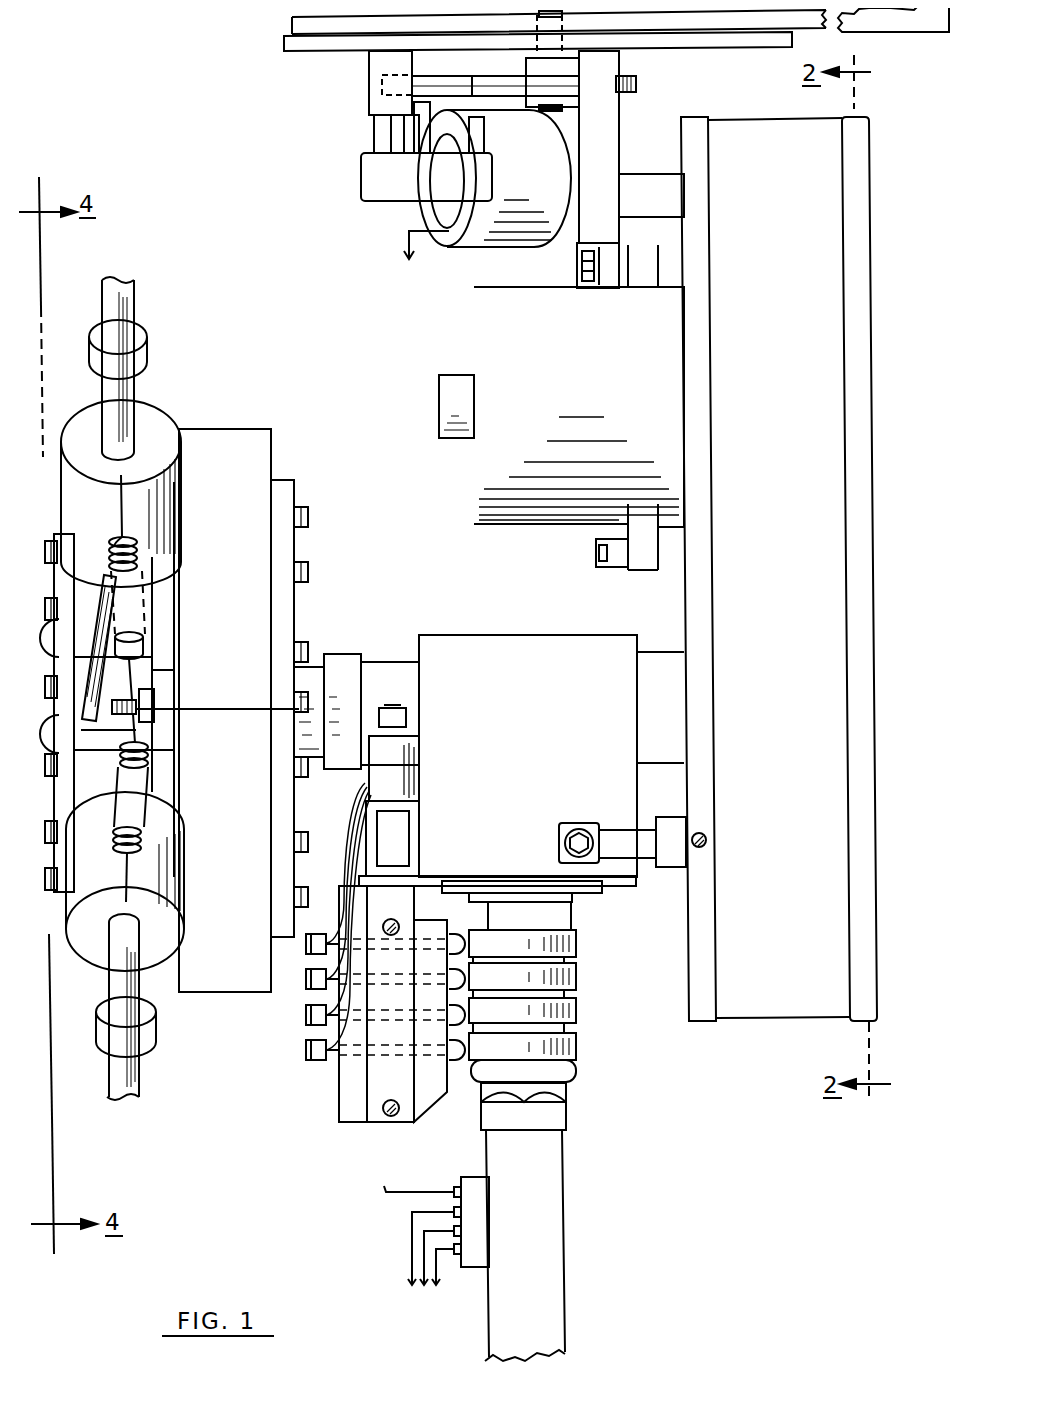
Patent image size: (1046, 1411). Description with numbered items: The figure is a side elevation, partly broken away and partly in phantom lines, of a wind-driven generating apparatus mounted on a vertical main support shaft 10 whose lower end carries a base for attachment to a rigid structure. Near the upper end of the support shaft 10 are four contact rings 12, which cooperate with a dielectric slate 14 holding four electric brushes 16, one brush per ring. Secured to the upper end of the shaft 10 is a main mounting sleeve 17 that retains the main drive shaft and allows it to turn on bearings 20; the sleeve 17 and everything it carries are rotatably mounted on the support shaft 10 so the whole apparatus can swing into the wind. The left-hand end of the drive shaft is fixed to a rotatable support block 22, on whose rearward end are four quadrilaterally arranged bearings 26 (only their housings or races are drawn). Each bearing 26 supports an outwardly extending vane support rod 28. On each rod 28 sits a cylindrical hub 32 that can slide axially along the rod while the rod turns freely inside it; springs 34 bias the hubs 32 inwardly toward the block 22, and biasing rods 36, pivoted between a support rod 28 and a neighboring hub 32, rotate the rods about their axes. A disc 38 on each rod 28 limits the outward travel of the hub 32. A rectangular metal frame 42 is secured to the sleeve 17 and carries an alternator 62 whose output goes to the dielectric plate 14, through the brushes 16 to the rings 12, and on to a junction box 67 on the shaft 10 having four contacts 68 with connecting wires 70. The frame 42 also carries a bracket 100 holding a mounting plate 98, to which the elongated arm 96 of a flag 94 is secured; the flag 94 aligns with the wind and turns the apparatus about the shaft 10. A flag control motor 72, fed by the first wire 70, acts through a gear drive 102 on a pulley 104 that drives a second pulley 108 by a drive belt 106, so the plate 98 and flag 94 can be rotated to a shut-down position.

The main support shaft 10 is at (555, 1259).
The contact rings 12 is at (568, 1014).
The dielectric slate 14 is at (356, 1120).
The electric brushes 16 is at (465, 930).
The main mounting sleeve 17 is at (463, 652).
The bearings 20 is at (347, 661).
The rotatable support block 22 is at (213, 987).
The bearings 26 is at (150, 660).
The vane support rods 28 is at (128, 398).
The hubs 32 is at (165, 510).
The springs 34 is at (138, 572).
The biasing rods 36 is at (100, 636).
The disc 38 is at (150, 346).
The frame 42 is at (828, 547).
The alternator 62 is at (527, 525).
The junction box 67 is at (478, 1202).
The contacts 68 is at (458, 1192).
The connecting wires 70 is at (410, 1263).
The flag control motor 72 is at (472, 249).
The flag 94 is at (918, 28).
The elongated arm 96 is at (308, 27).
The mounting plate 98 is at (735, 44).
The bracket 100 is at (603, 152).
The gear drive 102 is at (390, 190).
The pulley 104 is at (383, 86).
The drive belt 106 is at (493, 90).
The pulley 108 is at (554, 108).